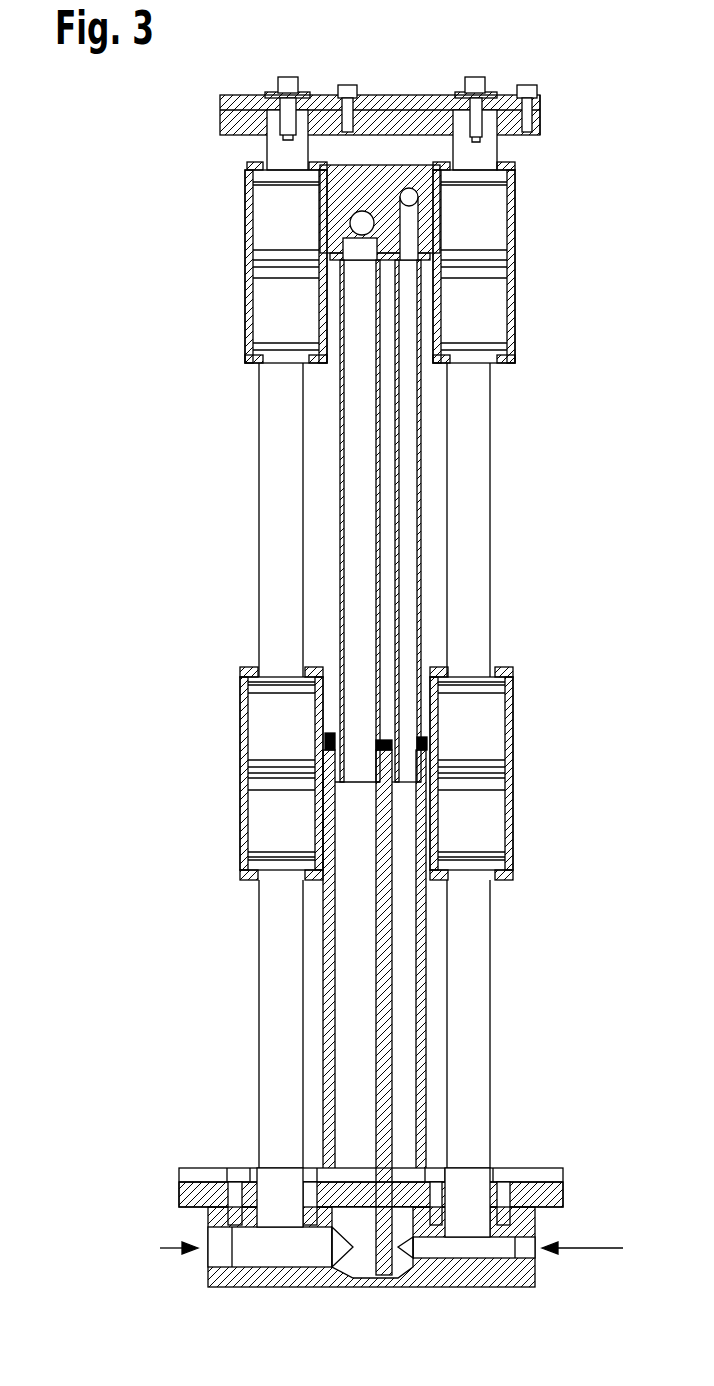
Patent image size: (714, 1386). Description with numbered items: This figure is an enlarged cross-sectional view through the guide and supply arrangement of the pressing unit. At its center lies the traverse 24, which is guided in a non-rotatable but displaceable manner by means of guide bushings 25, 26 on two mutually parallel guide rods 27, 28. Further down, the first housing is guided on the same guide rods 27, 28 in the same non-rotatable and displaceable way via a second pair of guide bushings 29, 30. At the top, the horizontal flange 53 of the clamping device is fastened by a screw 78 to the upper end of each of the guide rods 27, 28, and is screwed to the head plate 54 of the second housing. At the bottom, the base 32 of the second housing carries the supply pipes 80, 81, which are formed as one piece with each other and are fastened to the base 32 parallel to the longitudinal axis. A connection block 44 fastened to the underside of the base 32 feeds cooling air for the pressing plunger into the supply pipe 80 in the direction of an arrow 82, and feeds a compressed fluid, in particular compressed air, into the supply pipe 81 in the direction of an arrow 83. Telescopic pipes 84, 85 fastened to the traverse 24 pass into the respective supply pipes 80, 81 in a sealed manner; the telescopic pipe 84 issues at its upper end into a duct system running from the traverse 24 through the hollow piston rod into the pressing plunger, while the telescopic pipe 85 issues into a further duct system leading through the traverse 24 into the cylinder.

The traverse 24 is at (366, 188).
The guide bushing 25 is at (245, 262).
The guide bushing 26 is at (515, 262).
The guide rod 27 is at (282, 503).
The guide rod 28 is at (468, 505).
The guide bushing 29 is at (242, 785).
The guide bushing 30 is at (513, 785).
The base 32 is at (568, 1162).
The connection block 44 is at (535, 1290).
The flange 53 is at (414, 108).
The head plate 54 is at (540, 121).
The screw 78 is at (290, 77).
The supply pipe 80 is at (330, 973).
The supply pipe 81 is at (420, 973).
The arrow 82 is at (147, 1255).
The arrow 83 is at (593, 1252).
The telescopic pipe 84 is at (335, 600).
The telescopic pipe 85 is at (421, 600).